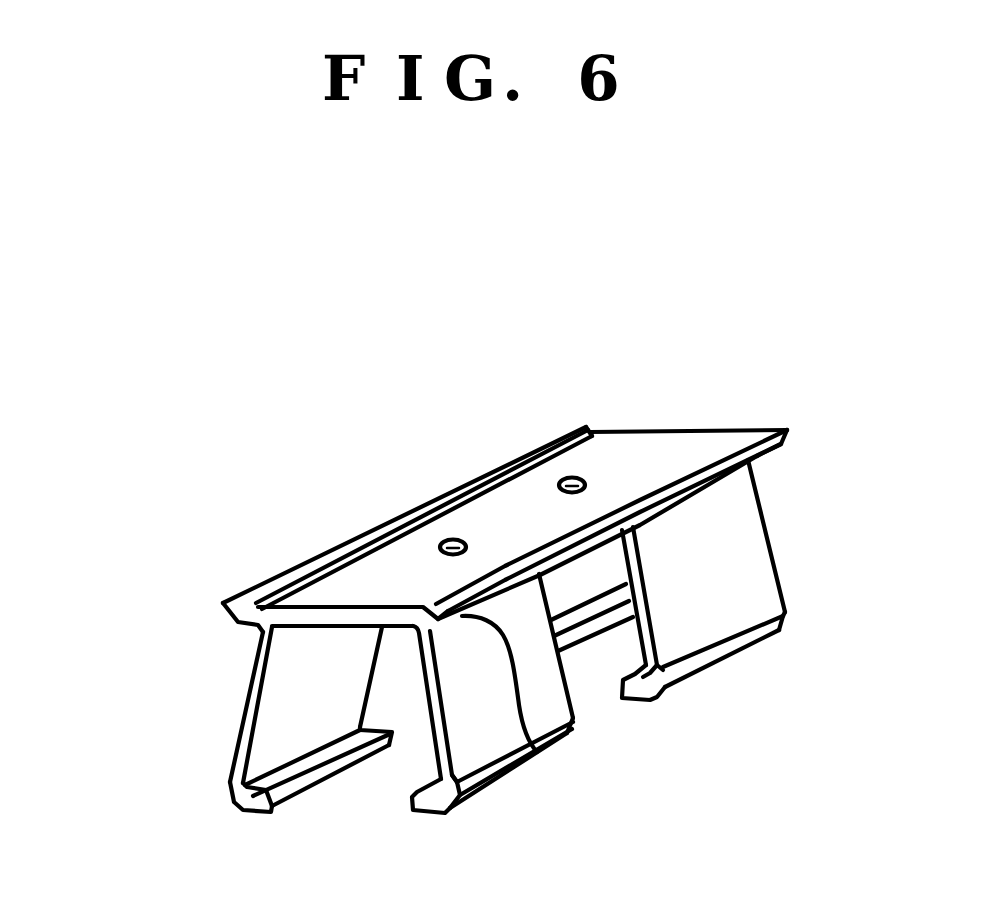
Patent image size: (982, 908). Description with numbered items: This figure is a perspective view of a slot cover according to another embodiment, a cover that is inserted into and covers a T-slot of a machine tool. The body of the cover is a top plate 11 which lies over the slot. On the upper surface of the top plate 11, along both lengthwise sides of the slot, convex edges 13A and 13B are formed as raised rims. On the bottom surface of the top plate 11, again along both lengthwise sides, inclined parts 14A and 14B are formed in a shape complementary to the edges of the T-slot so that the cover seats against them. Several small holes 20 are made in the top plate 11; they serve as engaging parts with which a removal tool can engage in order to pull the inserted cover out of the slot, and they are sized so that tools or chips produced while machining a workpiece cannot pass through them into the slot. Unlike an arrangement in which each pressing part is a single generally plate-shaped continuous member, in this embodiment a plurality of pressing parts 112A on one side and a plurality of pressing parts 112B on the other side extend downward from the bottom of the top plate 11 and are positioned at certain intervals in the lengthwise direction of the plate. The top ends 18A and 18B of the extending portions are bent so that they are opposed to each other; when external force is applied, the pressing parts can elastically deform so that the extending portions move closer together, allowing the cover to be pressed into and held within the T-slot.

The top plate 11 is at (652, 450).
The convex edge 13A is at (313, 563).
The convex edge 13B is at (753, 428).
The small holes 20 is at (450, 539).
The inclined part 14A is at (230, 612).
The inclined part 14B is at (537, 752).
The pressing parts 112A is at (287, 717).
The pressing parts 112B is at (725, 573).
The top end 18A is at (258, 815).
The top end 18B is at (425, 808).